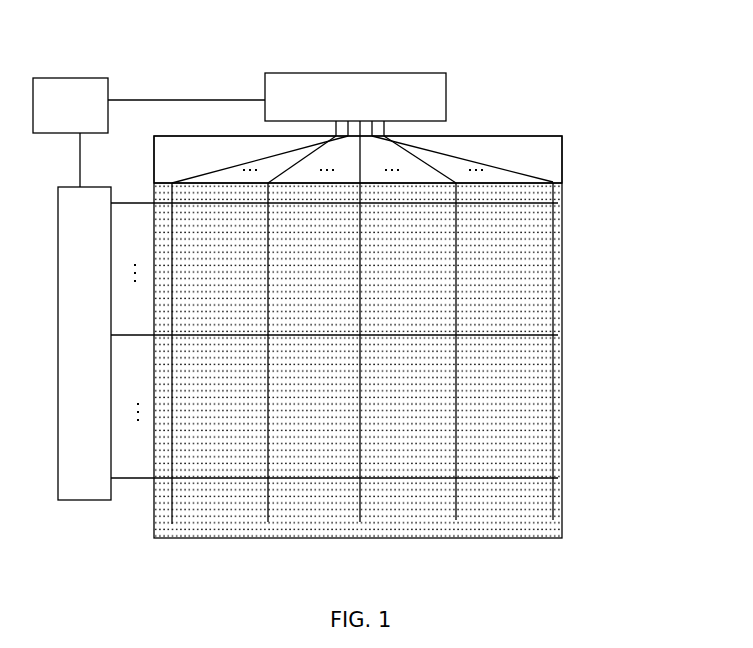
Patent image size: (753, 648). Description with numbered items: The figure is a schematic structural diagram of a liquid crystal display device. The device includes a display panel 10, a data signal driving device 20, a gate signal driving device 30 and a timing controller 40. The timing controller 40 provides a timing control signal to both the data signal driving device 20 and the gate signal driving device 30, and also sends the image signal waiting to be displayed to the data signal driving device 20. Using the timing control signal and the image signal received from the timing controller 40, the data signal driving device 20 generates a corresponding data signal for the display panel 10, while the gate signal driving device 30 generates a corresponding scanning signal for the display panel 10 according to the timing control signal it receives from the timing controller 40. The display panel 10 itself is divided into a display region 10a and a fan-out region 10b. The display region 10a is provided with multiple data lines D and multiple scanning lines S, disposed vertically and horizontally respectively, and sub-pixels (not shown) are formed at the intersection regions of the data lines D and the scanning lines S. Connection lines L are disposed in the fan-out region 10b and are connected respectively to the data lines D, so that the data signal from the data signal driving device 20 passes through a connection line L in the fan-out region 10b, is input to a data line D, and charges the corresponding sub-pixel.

The display panel 10 is at (652, 143).
The display region 10a is at (556, 209).
The fan-out region 10b is at (551, 150).
The data signal driving device 20 is at (352, 92).
The gate signal driving device 30 is at (80, 497).
The timing controller 40 is at (66, 90).
The data line D is at (171, 506).
The scanning line S is at (532, 337).
The connection line L is at (455, 150).